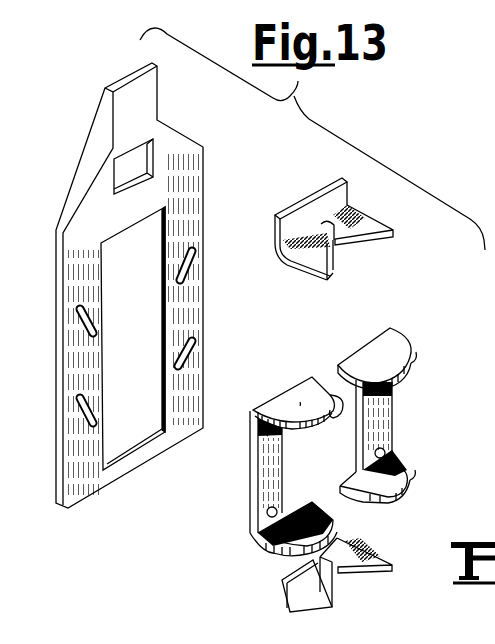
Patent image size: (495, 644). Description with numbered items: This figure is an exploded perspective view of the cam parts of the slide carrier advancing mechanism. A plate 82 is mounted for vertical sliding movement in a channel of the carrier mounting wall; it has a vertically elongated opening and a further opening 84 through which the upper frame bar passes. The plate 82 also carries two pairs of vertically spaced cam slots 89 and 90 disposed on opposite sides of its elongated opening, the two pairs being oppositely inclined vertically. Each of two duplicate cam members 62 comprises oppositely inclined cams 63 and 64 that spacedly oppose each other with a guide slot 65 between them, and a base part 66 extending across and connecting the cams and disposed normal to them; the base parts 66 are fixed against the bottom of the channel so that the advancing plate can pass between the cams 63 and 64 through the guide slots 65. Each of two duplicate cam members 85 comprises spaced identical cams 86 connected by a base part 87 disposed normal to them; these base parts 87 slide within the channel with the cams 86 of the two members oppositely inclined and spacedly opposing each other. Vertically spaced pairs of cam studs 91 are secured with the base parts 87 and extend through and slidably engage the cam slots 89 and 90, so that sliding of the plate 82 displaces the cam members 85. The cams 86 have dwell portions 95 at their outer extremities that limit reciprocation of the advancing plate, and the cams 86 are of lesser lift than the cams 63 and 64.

The plate 82 is at (186, 141).
The opening 84 is at (133, 184).
The base part 87 is at (138, 447).
The cam slots 89 is at (80, 328).
The cam slots 90 is at (194, 266).
The cam member 62 is at (324, 401).
The base part 66 is at (312, 207).
The cam 64 is at (378, 238).
The guide slot 65 is at (334, 240).
The cam 63 is at (330, 272).
The cam member 85 is at (253, 412).
The cam 86 is at (333, 393).
The cam studs 91 is at (262, 436).
The dwell portions 95 is at (340, 413).